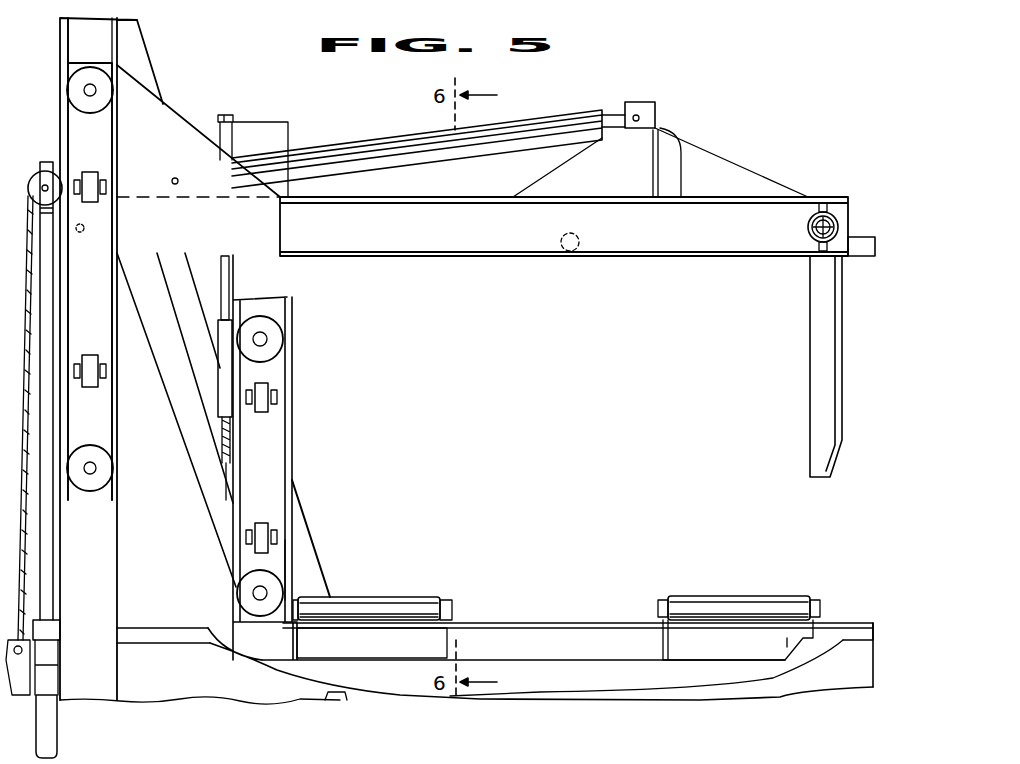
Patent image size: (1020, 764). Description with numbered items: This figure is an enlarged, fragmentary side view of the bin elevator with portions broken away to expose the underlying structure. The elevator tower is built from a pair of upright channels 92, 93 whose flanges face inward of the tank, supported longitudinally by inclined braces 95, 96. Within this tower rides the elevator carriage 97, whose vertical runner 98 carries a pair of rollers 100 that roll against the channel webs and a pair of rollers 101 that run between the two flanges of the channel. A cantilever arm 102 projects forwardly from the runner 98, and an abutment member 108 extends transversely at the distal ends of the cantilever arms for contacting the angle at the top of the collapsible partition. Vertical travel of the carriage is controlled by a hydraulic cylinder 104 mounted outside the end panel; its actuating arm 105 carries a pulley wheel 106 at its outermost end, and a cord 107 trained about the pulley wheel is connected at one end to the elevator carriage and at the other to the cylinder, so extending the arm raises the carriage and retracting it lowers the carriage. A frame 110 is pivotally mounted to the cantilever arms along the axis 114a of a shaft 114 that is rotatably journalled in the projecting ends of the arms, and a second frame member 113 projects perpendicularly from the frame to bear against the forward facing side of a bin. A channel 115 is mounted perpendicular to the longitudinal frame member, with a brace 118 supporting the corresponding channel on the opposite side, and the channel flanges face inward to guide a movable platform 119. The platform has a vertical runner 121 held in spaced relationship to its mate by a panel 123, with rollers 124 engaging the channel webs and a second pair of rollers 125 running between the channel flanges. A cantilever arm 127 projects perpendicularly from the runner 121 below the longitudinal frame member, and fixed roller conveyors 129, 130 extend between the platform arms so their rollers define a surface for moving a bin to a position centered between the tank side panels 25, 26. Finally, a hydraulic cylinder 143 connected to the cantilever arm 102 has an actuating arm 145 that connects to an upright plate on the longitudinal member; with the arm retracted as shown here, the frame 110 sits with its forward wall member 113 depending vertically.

The tank side panel 25 is at (797, 683).
The tank side panel 26 is at (830, 634).
The upright channel 92 is at (118, 676).
The upright channel 93 is at (77, 45).
The inclined brace 95 is at (352, 700).
The inclined brace 96 is at (302, 517).
The elevator carriage 97 is at (187, 116).
The vertical runner 98 is at (97, 428).
The roller 100 is at (98, 174).
The roller 101 is at (73, 88).
The cantilever arm 102 is at (467, 243).
The hydraulic cylinder 104 is at (62, 727).
The actuating arm 105 is at (48, 557).
The pulley wheel 106 is at (37, 178).
The cord 107 is at (80, 224).
The abutment member 108 is at (857, 257).
The frame 110 is at (733, 152).
The second frame member 113 is at (812, 393).
The shaft 114 is at (808, 221).
The axis 114a is at (830, 214).
The channel 115 is at (281, 283).
The brace 118 is at (208, 503).
The movable platform 119 is at (294, 484).
The vertical runner 121 is at (276, 561).
The panel 123 is at (297, 366).
The roller 124 is at (275, 389).
The roller 125 is at (278, 338).
The cantilever arm 127 is at (528, 633).
The fixed roller conveyor 129 is at (403, 603).
The fixed roller conveyor 130 is at (735, 600).
The hydraulic cylinder 143 is at (357, 148).
The actuating arm 145 is at (615, 118).